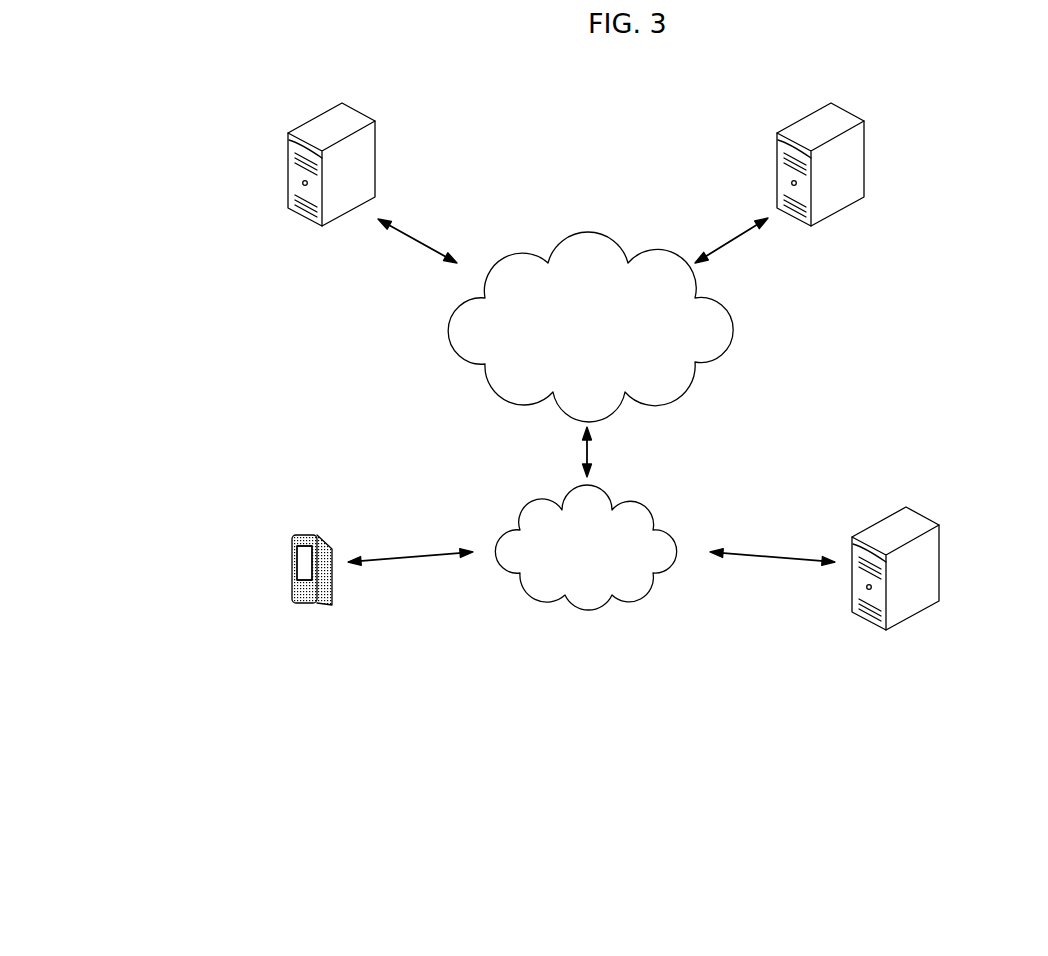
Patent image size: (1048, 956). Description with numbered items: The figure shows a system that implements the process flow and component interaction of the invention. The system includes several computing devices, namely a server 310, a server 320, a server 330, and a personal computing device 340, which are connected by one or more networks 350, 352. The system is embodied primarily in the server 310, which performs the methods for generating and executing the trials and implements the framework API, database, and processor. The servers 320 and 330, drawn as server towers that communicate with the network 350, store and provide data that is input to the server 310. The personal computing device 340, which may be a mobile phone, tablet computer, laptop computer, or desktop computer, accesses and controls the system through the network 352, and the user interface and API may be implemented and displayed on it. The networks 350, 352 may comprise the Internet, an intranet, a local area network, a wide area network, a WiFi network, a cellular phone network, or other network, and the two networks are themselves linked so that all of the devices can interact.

The server 310 is at (910, 568).
The server 320 is at (852, 142).
The server 330 is at (325, 125).
The personal computing device 340 is at (303, 570).
The network 350 is at (590, 327).
The network 352 is at (585, 547).